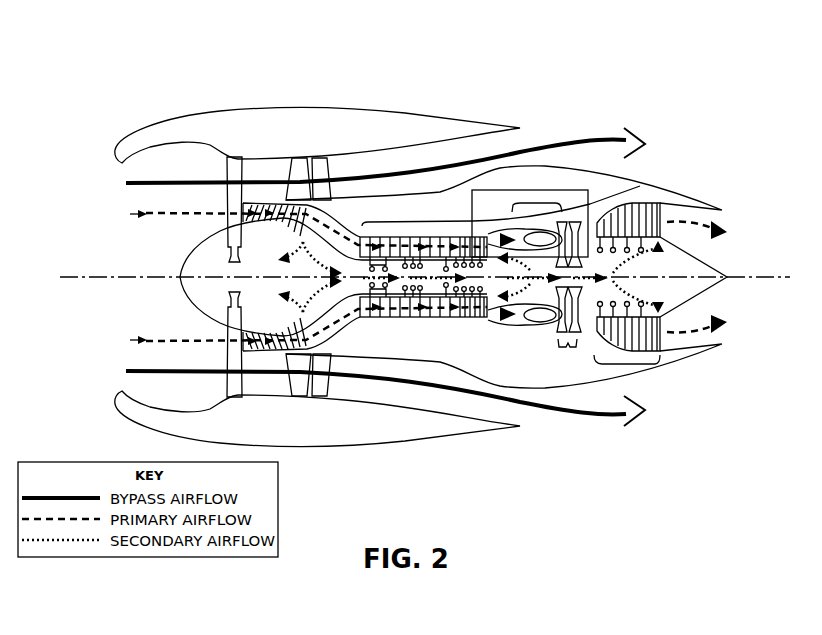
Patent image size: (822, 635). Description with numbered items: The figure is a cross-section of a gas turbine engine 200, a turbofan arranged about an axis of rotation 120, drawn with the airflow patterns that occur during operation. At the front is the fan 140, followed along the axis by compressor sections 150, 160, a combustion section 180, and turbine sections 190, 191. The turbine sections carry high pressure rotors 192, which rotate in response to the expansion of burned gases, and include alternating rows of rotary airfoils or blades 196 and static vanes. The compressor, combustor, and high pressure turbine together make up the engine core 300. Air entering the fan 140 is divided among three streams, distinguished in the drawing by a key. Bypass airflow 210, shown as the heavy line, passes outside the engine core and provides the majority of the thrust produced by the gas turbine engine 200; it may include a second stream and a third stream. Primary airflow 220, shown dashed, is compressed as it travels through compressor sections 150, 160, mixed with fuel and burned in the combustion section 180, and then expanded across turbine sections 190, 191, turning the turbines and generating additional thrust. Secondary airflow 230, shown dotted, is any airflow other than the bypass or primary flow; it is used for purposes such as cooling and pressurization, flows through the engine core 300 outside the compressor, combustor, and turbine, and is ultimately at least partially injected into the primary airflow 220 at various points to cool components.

The gas turbine engine 200 is at (122, 68).
The axis of rotation 120 is at (755, 278).
The fan 140 is at (226, 160).
The compressor section 150 is at (278, 204).
The compressor section 160 is at (430, 220).
The combustion section 180 is at (540, 203).
The turbine section 190 is at (568, 348).
The turbine section 191 is at (628, 364).
The high pressure rotors 192 is at (640, 186).
The rotary airfoils or blades 196 is at (650, 338).
The bypass airflow 210 is at (130, 184).
The primary airflow 220 is at (137, 219).
The secondary airflow 230 is at (230, 240).
The engine core 300 is at (573, 221).